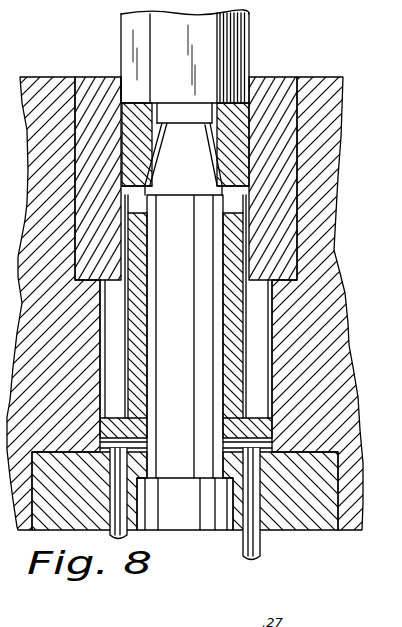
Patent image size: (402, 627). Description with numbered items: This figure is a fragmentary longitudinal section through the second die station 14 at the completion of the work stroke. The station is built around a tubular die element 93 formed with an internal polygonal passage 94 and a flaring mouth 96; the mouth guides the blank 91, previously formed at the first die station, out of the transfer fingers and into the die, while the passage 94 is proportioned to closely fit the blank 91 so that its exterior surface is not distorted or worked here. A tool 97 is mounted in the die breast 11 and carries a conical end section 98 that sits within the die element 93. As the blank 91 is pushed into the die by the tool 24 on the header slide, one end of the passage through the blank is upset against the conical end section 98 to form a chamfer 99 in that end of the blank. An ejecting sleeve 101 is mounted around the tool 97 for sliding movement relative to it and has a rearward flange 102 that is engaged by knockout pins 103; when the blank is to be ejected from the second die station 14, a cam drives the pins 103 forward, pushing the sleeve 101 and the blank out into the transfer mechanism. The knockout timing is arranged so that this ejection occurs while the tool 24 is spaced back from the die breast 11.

The die breast 11 is at (340, 97).
The second die station 14 is at (266, 61).
The tool 24 is at (249, 33).
The blank 91 is at (126, 145).
The tubular die element 93 is at (282, 82).
The internal polygonal passage 94 is at (242, 126).
The flaring mouth 96 is at (120, 86).
The tool 97 is at (207, 338).
The conical end section 98 is at (213, 142).
The chamfer 99 is at (153, 174).
The ejecting sleeve 101 is at (236, 392).
The rearward flange 102 is at (263, 436).
The knockout pins 103 is at (127, 537).